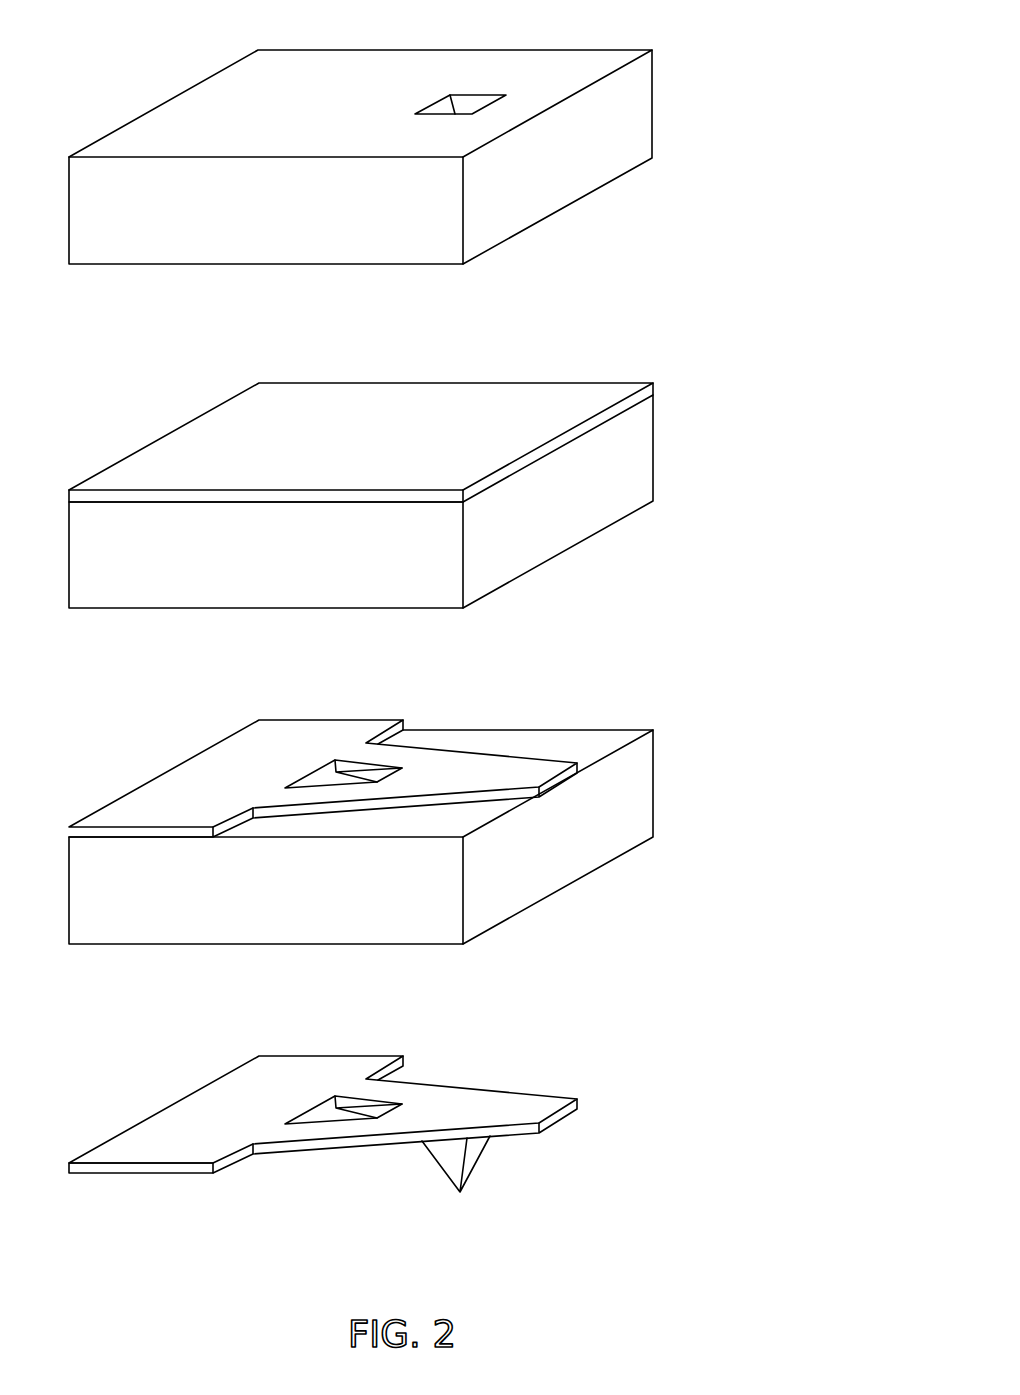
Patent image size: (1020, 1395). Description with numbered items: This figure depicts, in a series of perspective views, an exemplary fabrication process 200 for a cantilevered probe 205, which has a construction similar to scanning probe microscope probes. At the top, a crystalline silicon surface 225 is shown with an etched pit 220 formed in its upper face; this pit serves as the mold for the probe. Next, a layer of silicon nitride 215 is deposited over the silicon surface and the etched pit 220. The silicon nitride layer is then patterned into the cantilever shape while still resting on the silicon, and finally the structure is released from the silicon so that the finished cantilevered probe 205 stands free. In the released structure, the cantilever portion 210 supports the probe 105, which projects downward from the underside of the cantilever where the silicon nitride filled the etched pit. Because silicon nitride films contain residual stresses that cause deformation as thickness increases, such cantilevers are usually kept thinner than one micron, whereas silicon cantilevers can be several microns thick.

The crystalline silicon surface 225 is at (632, 50).
The etched pit 220 is at (462, 95).
The layer of silicon nitride 215 is at (632, 382).
The fabrication process 200 is at (733, 607).
The cantilevered probe 205 is at (368, 1138).
The cantilever portion 210 is at (182, 1177).
The probe 105 is at (485, 1163).